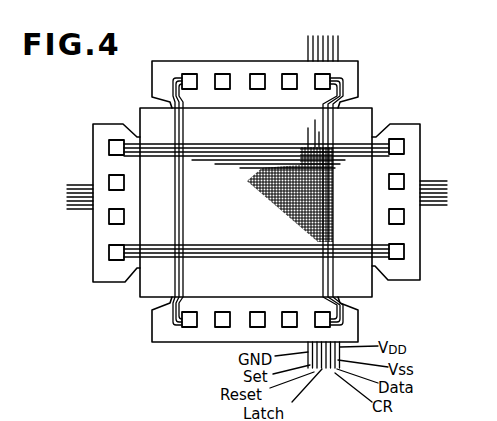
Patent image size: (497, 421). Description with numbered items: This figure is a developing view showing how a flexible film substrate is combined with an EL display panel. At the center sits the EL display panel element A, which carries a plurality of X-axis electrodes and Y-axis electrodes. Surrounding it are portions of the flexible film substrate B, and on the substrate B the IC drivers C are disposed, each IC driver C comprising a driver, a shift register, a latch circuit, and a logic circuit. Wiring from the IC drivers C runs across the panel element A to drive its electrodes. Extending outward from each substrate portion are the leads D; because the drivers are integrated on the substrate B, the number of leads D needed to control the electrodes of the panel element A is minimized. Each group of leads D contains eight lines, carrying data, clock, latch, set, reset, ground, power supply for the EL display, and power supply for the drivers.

The EL display panel element A is at (155, 293).
The flexible film substrate B is at (157, 82).
The IC drivers C is at (188, 76).
The leads D is at (343, 34).